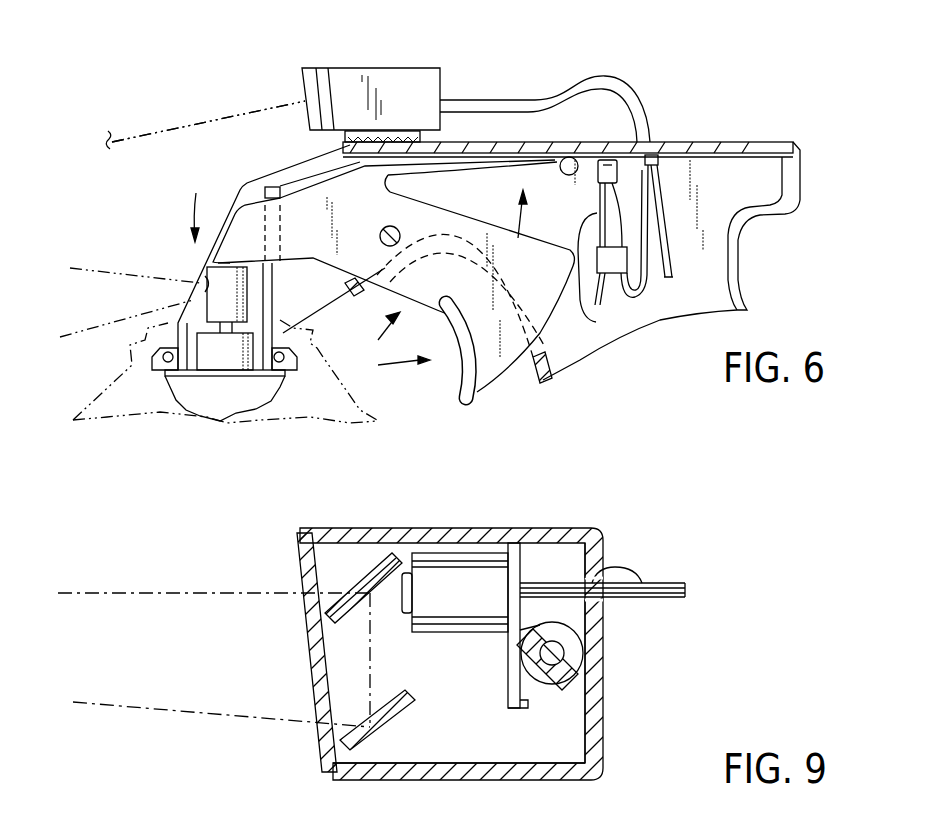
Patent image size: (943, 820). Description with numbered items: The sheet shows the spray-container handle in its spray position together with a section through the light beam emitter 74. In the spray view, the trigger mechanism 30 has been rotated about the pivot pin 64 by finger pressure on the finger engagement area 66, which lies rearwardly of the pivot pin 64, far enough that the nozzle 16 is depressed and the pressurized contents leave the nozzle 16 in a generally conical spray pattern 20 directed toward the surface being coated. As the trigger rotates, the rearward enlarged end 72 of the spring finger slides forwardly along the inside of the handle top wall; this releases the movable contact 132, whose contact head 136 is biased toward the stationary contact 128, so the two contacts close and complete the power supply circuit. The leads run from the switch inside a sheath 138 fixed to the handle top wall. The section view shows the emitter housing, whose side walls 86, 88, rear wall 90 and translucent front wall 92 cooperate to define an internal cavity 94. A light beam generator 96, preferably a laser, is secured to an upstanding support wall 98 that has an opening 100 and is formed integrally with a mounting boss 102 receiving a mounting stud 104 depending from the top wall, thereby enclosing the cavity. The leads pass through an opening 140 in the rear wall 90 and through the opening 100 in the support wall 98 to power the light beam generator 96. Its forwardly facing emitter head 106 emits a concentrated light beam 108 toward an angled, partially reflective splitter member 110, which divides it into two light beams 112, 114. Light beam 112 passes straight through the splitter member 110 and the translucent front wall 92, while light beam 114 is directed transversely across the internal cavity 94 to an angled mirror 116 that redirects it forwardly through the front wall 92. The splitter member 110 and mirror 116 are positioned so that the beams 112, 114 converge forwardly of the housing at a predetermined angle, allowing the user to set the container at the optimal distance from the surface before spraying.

In FIG. 6, the nozzle 16 is at (208, 283).
In FIG. 6, the conical spray pattern 20 is at (83, 328).
In FIG. 6, the trigger mechanism 30 is at (377, 338).
In FIG. 6, the pivot pin 64 is at (247, 213).
In FIG. 6, the finger engagement area 66 is at (455, 382).
In FIG. 6, the rearward enlarged end 72 is at (557, 143).
In FIG. 6, the light beam emitter 74 is at (413, 48).
In FIG. 9, the side wall 86 is at (488, 528).
In FIG. 9, the side wall 88 is at (488, 780).
In FIG. 9, the rear wall 90 is at (603, 708).
In FIG. 9, the translucent front window or wall 92 is at (310, 655).
In FIG. 9, the internal cavity 94 is at (427, 772).
In FIG. 9, the light beam generator 96 is at (458, 553).
In FIG. 9, the upstanding support wall 98 is at (523, 552).
In FIG. 9, the opening 100 is at (562, 578).
In FIG. 9, the mounting boss 102 is at (538, 683).
In FIG. 9, the mounting stud 104 is at (578, 657).
In FIG. 9, the emitter head 106 is at (405, 575).
In FIG. 9, the light beam 108 is at (375, 532).
In FIG. 9, the splitter member 110 is at (340, 587).
In FIG. 6, the light beam 112 is at (218, 122).
In FIG. 9, the light beam 112 is at (130, 592).
In FIG. 6, the light beam 114 is at (208, 121).
In FIG. 9, the light beam 114 is at (375, 690).
In FIG. 9, the angled mirror 116 is at (400, 722).
In FIG. 6, the stationary contact 128 is at (581, 330).
In FIG. 6, the movable contact 132 is at (603, 226).
In FIG. 6, the contact head 136 is at (617, 167).
In FIG. 6, the sheath 138 is at (546, 98).
In FIG. 9, the sheath 138 is at (662, 580).
In FIG. 9, the opening 140 is at (640, 600).